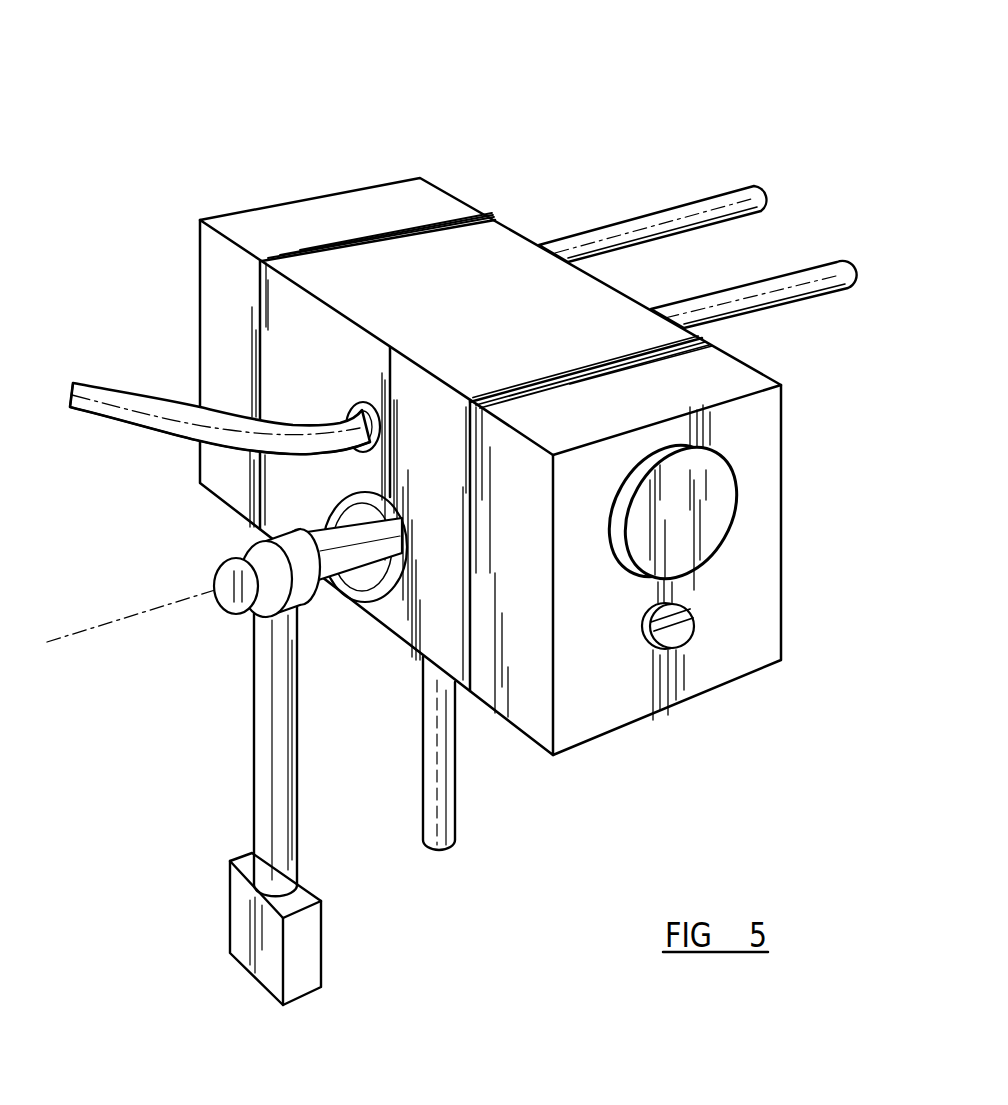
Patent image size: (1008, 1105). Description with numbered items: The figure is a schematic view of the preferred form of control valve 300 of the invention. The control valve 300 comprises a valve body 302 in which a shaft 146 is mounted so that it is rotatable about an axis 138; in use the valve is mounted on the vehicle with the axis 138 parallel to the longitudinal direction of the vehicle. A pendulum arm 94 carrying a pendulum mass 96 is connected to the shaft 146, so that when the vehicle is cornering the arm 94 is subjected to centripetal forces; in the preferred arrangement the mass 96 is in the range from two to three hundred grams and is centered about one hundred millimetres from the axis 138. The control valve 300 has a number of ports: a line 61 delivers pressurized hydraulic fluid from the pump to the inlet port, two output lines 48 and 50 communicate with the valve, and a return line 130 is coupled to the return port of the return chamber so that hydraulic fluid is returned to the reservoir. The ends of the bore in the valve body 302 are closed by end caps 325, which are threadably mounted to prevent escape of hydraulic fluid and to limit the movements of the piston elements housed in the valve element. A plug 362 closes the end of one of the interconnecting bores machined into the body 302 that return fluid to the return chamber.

The control valve 300 is at (395, 125).
The valve body 302 is at (455, 187).
The output line 48 is at (688, 204).
The output line 50 is at (783, 288).
The line 61 is at (138, 392).
The axis 138 is at (165, 598).
The shaft 146 is at (228, 610).
The pendulum arm 94 is at (268, 737).
The pendulum mass 96 is at (240, 929).
The return line 130 is at (432, 739).
The end cap 325 is at (717, 517).
The plug 362 is at (668, 633).